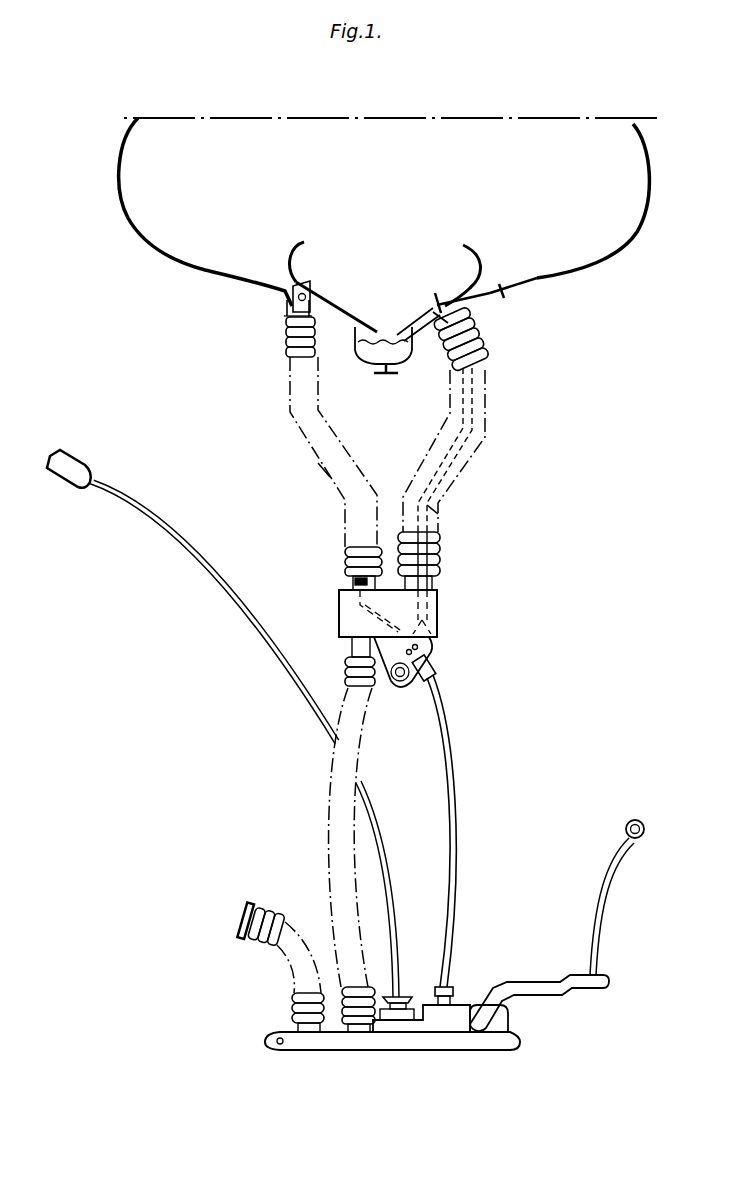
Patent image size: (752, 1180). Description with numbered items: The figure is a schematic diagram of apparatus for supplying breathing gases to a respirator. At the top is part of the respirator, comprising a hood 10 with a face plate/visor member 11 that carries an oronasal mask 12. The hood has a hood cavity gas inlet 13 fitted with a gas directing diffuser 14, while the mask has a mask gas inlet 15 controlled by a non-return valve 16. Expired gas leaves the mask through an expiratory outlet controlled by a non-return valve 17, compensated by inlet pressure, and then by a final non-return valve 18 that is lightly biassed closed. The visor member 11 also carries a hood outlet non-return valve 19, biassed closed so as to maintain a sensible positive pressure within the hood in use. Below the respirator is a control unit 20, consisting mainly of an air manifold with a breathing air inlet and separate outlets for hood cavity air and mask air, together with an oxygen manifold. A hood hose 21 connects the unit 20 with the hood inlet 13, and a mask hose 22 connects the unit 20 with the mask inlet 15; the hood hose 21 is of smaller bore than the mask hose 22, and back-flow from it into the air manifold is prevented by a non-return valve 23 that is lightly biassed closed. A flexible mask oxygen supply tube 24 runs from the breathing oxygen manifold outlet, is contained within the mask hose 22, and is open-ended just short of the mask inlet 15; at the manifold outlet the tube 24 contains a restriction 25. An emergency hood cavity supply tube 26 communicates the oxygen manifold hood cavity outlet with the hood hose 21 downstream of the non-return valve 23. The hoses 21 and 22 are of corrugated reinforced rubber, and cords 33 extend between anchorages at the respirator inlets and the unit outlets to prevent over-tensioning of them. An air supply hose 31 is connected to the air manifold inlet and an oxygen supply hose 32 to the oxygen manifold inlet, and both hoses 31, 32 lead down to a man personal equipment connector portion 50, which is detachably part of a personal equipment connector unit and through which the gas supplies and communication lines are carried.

The hood 10 is at (118, 217).
The face plate/visor member 11 is at (540, 277).
The oronasal mask 12 is at (299, 238).
The hood cavity gas inlet 13 is at (290, 306).
The gas directing diffuser 14 is at (306, 290).
The mask gas inlet 15 is at (450, 308).
The non-return valve 16 is at (438, 288).
The non-return valve 17 is at (392, 336).
The final non-return valve 18 is at (402, 371).
The hood outlet non-return valve 19 is at (508, 294).
The control unit 20 is at (444, 600).
The hood cavity supply duct (hood hose) 21 is at (286, 388).
The mask supply duct (mask hose) 22 is at (476, 462).
The non-return valve 23 is at (350, 577).
The flexible mask oxygen supply tube 24 is at (470, 403).
The restriction 25 is at (440, 622).
The emergency hood cavity supply tube 26 is at (380, 610).
The air supply hose 31 is at (329, 823).
The oxygen supply hose 32 is at (462, 765).
The cords 33 is at (322, 468).
The man personal equipment connector portion 50 is at (522, 1047).